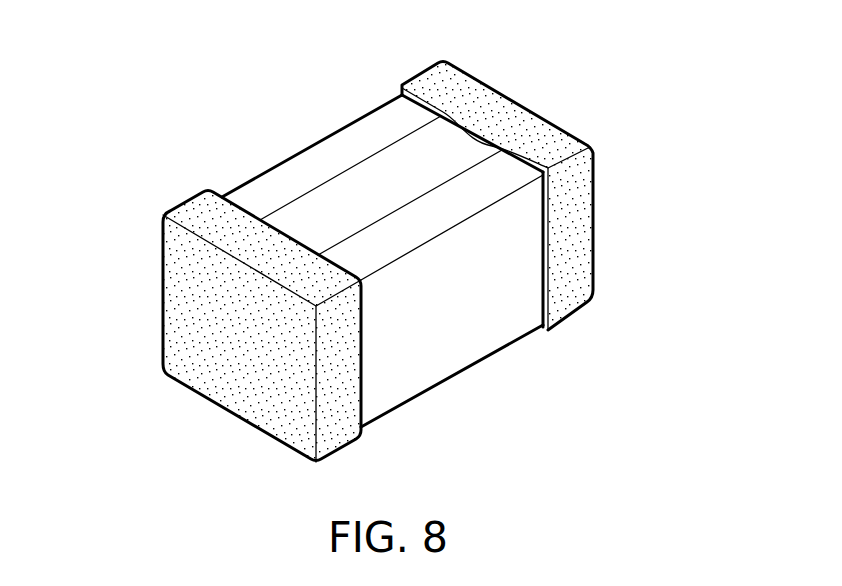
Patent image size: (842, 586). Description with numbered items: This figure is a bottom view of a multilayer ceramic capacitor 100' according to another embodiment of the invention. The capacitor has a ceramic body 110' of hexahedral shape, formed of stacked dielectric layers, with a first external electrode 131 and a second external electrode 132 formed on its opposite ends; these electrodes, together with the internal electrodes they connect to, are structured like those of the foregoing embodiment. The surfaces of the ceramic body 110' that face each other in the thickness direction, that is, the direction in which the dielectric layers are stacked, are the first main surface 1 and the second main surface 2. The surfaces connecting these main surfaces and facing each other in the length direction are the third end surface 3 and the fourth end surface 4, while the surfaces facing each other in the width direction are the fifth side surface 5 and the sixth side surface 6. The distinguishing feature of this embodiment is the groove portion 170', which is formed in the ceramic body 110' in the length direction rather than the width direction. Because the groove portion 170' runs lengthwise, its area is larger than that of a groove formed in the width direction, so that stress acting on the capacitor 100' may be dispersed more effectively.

The multilayer ceramic capacitor 100' is at (391, 258).
The ceramic body 110' is at (419, 258).
The groove portion 170' is at (395, 159).
The first external electrode 131 is at (172, 269).
The second external electrode 132 is at (585, 270).
The first main surface 1 is at (395, 383).
The second main surface 2 is at (390, 128).
The third end surface 3 is at (187, 320).
The fourth end surface 4 is at (575, 208).
The fifth side surface 5 is at (483, 322).
The sixth side surface 6 is at (280, 192).